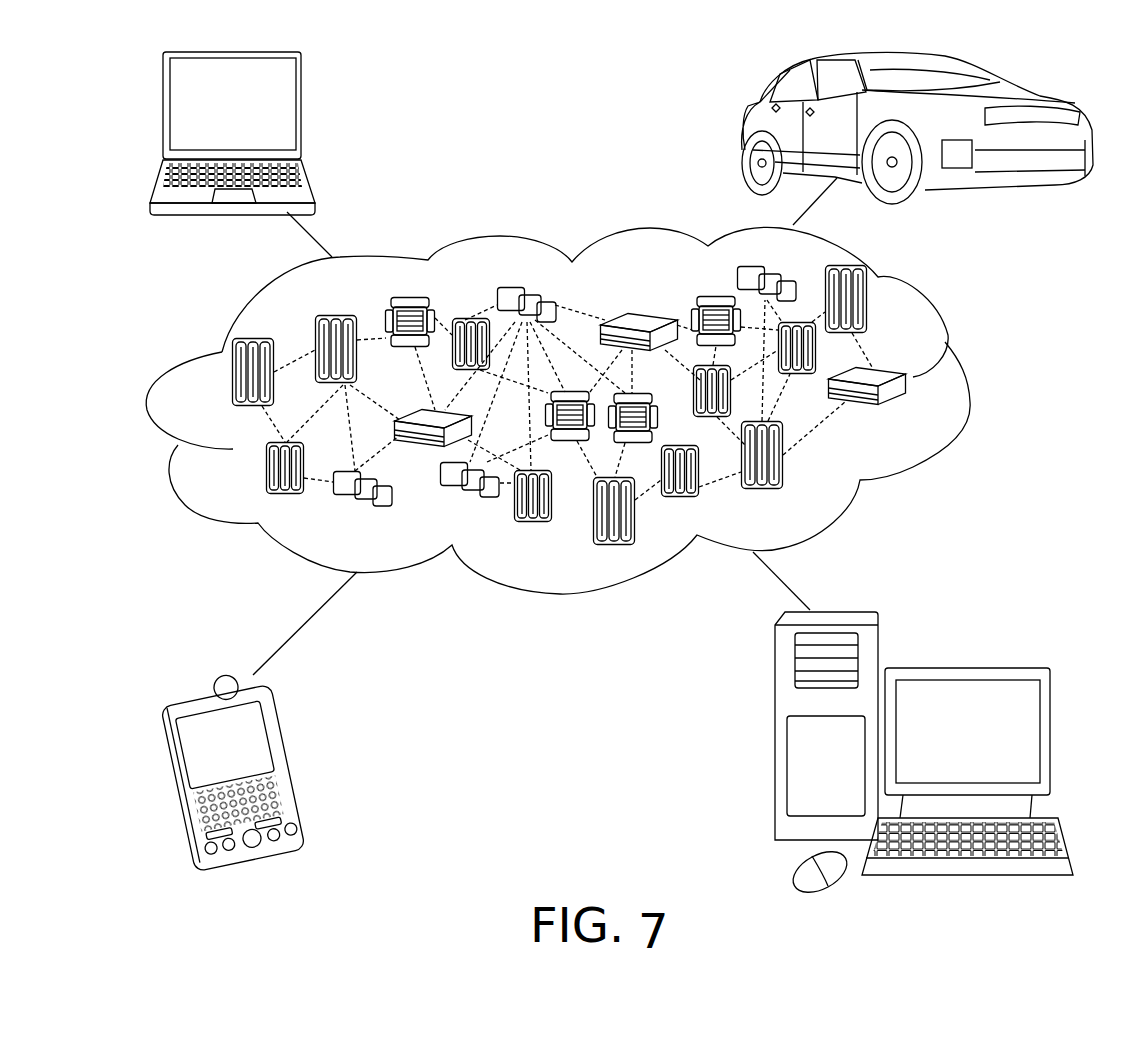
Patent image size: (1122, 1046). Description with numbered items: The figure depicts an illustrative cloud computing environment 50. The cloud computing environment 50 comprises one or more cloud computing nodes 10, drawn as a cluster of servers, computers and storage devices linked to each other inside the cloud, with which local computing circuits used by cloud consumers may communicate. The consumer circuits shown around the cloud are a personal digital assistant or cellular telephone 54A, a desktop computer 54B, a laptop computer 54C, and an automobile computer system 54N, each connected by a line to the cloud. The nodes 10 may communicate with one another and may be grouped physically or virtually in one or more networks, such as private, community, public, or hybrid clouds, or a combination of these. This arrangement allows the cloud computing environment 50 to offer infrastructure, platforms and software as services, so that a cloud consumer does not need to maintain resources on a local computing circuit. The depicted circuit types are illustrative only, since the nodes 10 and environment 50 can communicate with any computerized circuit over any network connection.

The cloud computing node 10 is at (920, 414).
The cloud computing environment 50 is at (967, 388).
The personal digital assistant (PDA) or cellular telephone 54A is at (290, 762).
The desktop computer 54B is at (965, 668).
The laptop computer 54C is at (301, 112).
The automobile computer system 54N is at (745, 130).